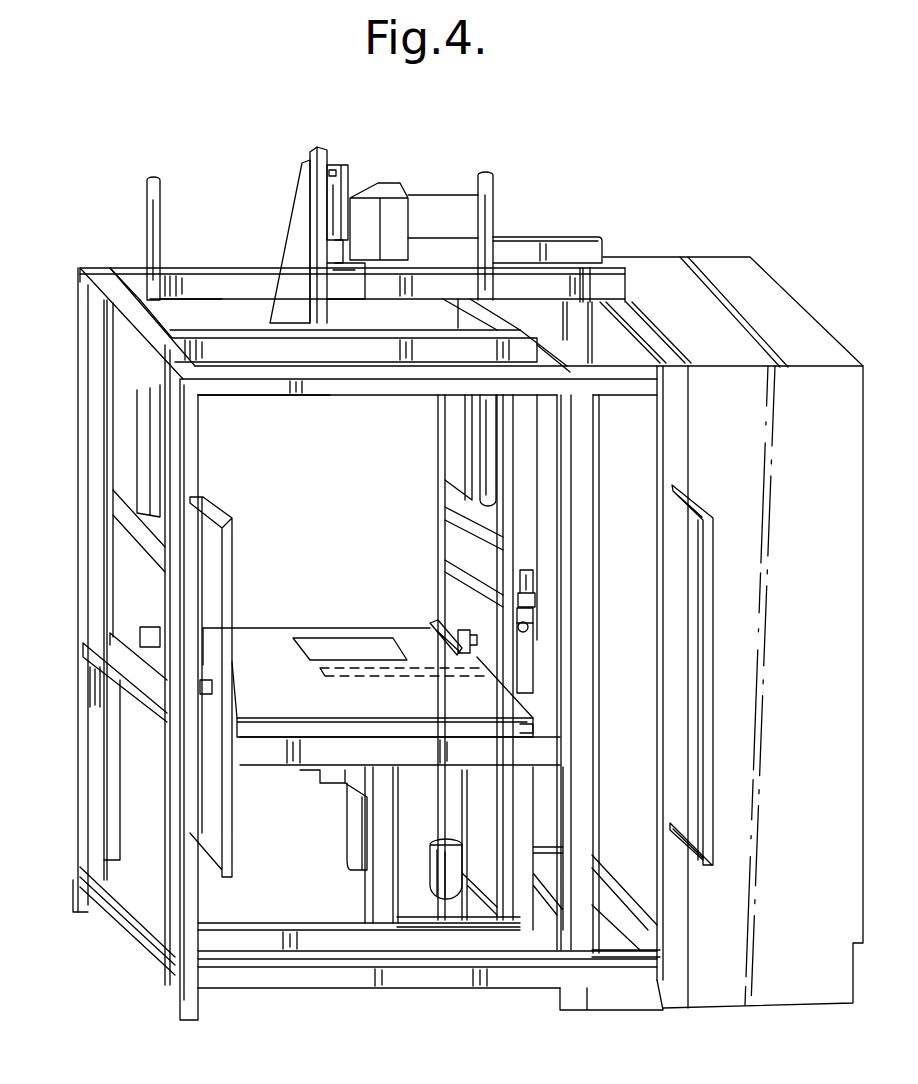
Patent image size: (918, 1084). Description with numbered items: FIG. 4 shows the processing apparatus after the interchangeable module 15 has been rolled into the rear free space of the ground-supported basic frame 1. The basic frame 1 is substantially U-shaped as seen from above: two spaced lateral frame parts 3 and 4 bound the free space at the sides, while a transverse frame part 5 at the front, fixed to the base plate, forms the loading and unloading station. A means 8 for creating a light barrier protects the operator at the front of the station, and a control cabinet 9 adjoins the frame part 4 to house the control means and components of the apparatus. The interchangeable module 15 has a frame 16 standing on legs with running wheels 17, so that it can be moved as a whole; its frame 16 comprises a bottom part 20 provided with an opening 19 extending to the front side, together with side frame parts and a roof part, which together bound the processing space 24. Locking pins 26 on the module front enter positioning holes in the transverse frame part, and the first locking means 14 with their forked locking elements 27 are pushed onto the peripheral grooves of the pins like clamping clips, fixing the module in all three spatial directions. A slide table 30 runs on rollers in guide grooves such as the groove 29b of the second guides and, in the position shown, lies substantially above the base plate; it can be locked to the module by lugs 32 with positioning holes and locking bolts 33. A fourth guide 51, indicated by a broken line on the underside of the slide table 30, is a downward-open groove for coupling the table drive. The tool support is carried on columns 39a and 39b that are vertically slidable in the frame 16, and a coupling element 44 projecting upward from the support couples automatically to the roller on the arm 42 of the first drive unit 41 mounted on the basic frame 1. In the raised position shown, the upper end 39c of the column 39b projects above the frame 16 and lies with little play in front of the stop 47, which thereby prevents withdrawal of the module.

The basic frame 1 is at (82, 393).
The frame part 3 is at (135, 700).
The frame part 4 is at (584, 450).
The frame part 5 is at (190, 925).
The means for creating a light barrier 8 is at (226, 845).
The control cabinet 9 is at (752, 300).
The first locking means 14 is at (538, 586).
The interchangeable module 15 is at (197, 268).
The frame 16 is at (132, 277).
The running wheels 17 is at (453, 898).
The opening 19 is at (335, 658).
The bottom part 20 is at (258, 638).
The processing space 24 is at (266, 423).
The locking pin 26 is at (536, 632).
The locking element 27 is at (536, 612).
The guide groove 29b is at (432, 623).
The slide table 30 is at (270, 710).
The lugs 32 is at (205, 690).
The locking bolts 33 is at (458, 636).
The column 39a is at (152, 198).
The column 39b is at (487, 441).
The upper end of column 39c is at (492, 180).
The first drive unit 41 is at (380, 188).
The arm 42 is at (342, 180).
The coupling element 44 is at (300, 223).
The stop 47 is at (546, 255).
The fourth guide 51 is at (420, 672).